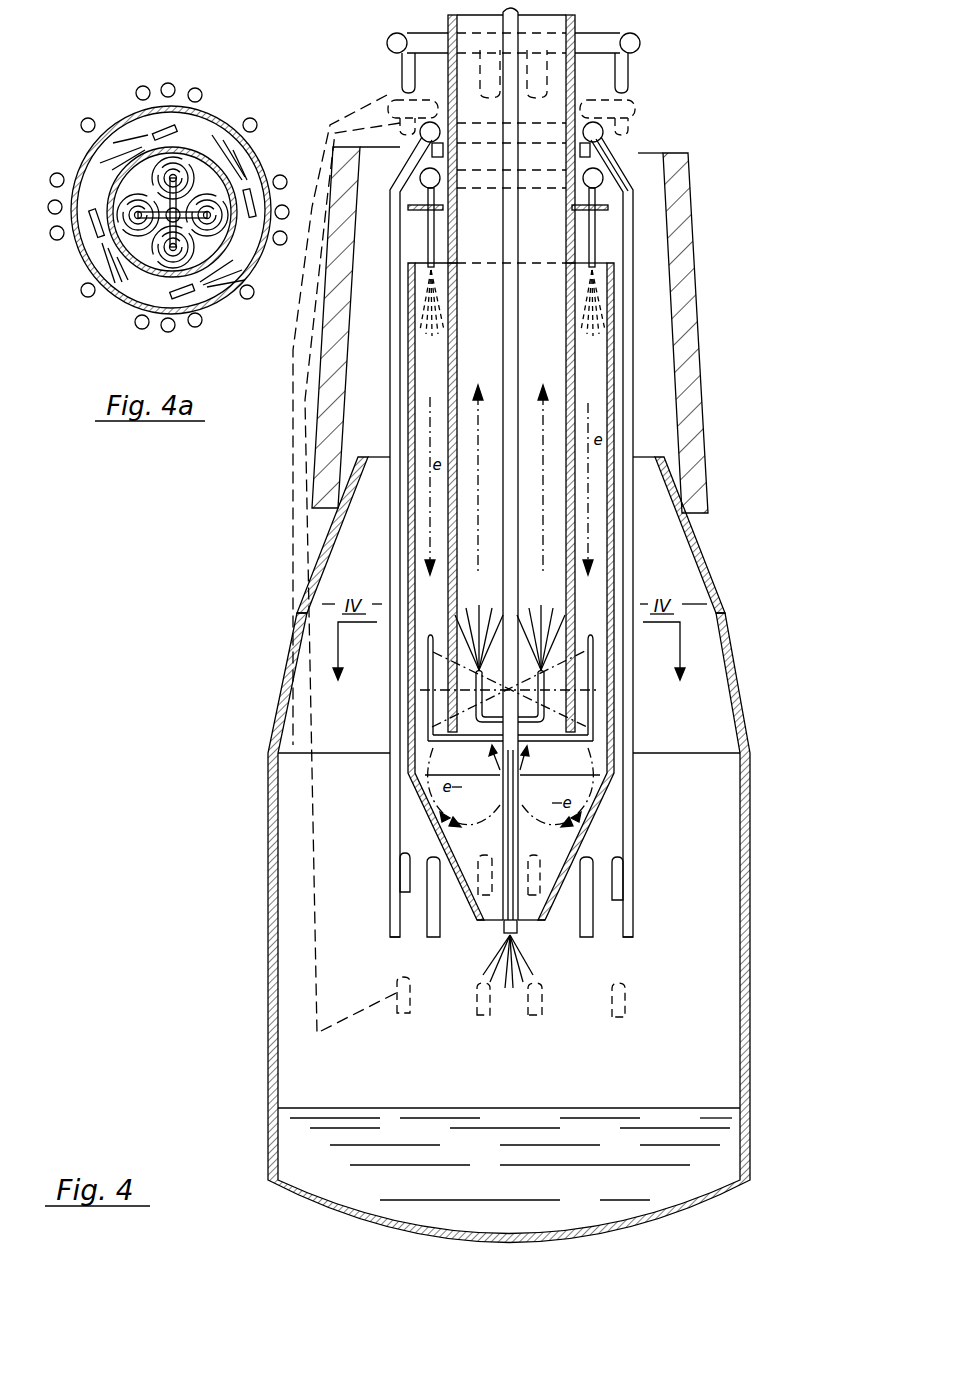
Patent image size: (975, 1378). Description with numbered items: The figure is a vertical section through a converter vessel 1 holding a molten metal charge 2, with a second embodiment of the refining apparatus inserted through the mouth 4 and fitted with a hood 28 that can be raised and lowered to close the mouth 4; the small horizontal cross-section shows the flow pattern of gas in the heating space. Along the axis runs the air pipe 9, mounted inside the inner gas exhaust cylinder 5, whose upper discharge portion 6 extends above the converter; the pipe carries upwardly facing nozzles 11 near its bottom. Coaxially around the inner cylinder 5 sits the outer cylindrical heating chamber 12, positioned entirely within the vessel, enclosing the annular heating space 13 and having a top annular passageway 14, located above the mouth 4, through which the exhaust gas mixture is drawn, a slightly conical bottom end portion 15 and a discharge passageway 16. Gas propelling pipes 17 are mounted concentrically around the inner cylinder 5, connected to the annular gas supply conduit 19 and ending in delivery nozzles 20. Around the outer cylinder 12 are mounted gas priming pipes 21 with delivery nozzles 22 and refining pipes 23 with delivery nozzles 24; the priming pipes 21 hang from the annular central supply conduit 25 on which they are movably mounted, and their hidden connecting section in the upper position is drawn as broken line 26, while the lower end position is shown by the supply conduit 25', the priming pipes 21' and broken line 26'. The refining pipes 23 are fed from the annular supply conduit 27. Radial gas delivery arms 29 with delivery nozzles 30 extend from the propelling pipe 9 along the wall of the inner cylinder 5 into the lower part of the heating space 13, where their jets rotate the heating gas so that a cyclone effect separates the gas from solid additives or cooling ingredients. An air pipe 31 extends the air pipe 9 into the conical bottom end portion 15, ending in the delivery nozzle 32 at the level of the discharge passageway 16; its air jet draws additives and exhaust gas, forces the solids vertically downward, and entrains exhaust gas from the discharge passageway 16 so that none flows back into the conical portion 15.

In FIG. 4, the converter vessel 1 is at (750, 863).
In FIG. 4, the molten metal charge 2 is at (682, 1155).
In FIG. 4, the mouth 4 is at (646, 457).
In FIG. 4, the inner gas exhaust cylinder 5 is at (575, 380).
In FIG. 4, the upper discharge portion 6 is at (532, 132).
In FIG. 4a, the air pipe 9 is at (165, 219).
In FIG. 4, the air pipe 9 is at (520, 305).
In FIG. 4a, the nozzles 11 is at (204, 231).
In FIG. 4, the nozzles 11 is at (595, 662).
In FIG. 4, the outer cylindrical heating chamber 12 is at (406, 577).
In FIG. 4, the annular heating space 13 is at (596, 543).
In FIG. 4, the top annular passageway 14 is at (427, 260).
In FIG. 4, the conical bottom end portion 15 is at (587, 823).
In FIG. 4, the discharge passageway 16 is at (503, 928).
In FIG. 4, the gas propelling pipes 17 is at (596, 222).
In FIG. 4, the annular gas supply conduit 19 is at (588, 167).
In FIG. 4, the delivery nozzles 20 is at (598, 268).
In FIG. 4a, the gas priming pipes 21 is at (147, 188).
In FIG. 4, the gas priming pipes 21 is at (505, 541).
In FIG. 4, the priming pipes in lower end position 21' is at (519, 576).
In FIG. 4, the delivery nozzles 22 is at (404, 895).
In FIG. 4a, the refining pipes 23 is at (176, 84).
In FIG. 4, the refining pipes 23 is at (390, 428).
In FIG. 4, the delivery nozzles 24 is at (432, 938).
In FIG. 4, the annular central supply conduit 25 is at (543, 33).
In FIG. 4, the annular supply conduit 25' is at (566, 102).
In FIG. 4, the broken line 26 is at (274, 420).
In FIG. 4, the broken line 26' is at (308, 578).
In FIG. 4, the annular supply conduit 27 is at (493, 133).
In FIG. 4, the hood 28 is at (700, 341).
In FIG. 4a, the radial gas delivery arms 29 is at (174, 123).
In FIG. 4, the radial gas delivery arms 29 is at (593, 702).
In FIG. 4a, the delivery nozzles 30 is at (143, 133).
In FIG. 4, the delivery nozzles 30 is at (593, 588).
In FIG. 4, the air pipe 31 is at (514, 793).
In FIG. 4, the delivery nozzle 32 is at (517, 928).